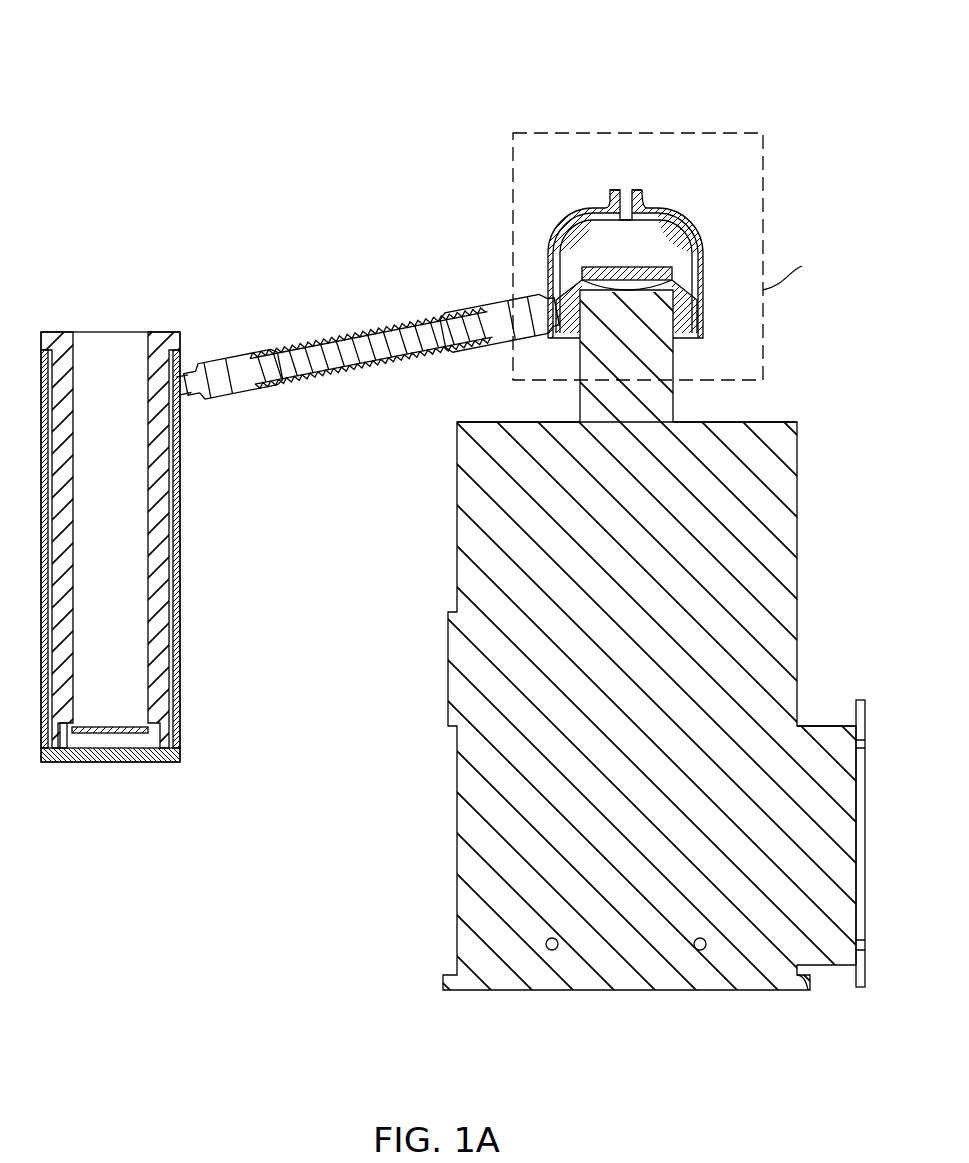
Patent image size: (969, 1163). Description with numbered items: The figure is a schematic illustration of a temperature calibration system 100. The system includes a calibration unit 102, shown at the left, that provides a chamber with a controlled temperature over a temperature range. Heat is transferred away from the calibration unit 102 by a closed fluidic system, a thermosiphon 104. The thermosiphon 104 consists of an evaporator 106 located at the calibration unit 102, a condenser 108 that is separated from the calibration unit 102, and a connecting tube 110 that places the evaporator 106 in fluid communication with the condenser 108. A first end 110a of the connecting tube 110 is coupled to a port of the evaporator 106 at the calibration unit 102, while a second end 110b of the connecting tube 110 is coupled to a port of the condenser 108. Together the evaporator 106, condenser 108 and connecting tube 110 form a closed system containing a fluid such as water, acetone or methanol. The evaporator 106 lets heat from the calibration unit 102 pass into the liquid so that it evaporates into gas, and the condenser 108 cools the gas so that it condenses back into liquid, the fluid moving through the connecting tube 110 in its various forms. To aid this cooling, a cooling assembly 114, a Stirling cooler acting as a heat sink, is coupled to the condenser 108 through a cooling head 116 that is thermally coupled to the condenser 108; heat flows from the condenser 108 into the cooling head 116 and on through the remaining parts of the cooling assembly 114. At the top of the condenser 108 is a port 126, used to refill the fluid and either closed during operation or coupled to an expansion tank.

The temperature calibration system 100 is at (140, 77).
The calibration unit 102 is at (80, 298).
The thermosiphon 104 is at (322, 273).
The evaporator 106 is at (172, 568).
The condenser 108 is at (690, 222).
The connecting tube 110 is at (355, 365).
The first end 110a is at (197, 385).
The second end 110b is at (522, 315).
The cooling assembly 114 is at (798, 572).
The cooling head 116 is at (675, 357).
The port 126 is at (626, 188).